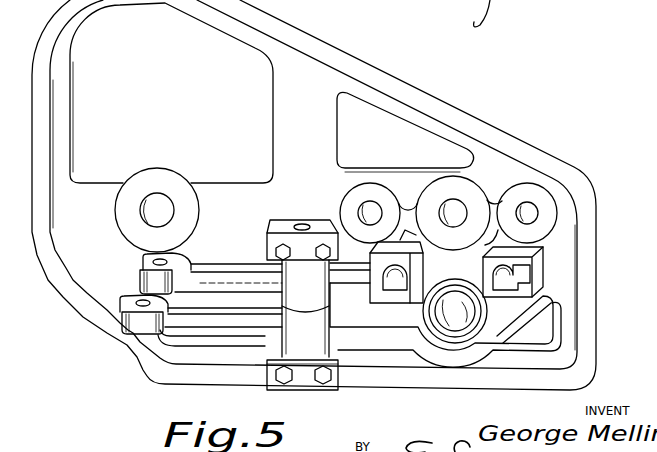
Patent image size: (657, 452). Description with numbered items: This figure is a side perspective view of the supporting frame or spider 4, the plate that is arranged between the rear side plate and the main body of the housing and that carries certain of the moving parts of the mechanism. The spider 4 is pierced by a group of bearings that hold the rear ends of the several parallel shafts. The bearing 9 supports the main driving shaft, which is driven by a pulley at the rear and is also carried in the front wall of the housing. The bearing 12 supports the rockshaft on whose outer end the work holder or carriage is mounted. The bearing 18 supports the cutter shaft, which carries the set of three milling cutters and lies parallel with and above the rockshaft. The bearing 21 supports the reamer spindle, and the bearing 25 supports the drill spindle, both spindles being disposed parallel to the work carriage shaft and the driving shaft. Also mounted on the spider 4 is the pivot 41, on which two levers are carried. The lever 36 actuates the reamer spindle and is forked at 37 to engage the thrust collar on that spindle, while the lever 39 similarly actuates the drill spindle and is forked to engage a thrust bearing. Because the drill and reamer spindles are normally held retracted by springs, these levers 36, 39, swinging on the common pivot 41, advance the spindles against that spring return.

The supporting frame or spider 4 is at (320, 50).
The bearing 9 is at (377, 192).
The bearing 25 is at (407, 222).
The bearing 18 is at (471, 196).
The bearing 21 is at (513, 243).
The fork 37 is at (520, 257).
The pivot 41 is at (302, 222).
The lever 39 is at (350, 276).
The lever 36 is at (385, 350).
The bearing 12 is at (463, 335).